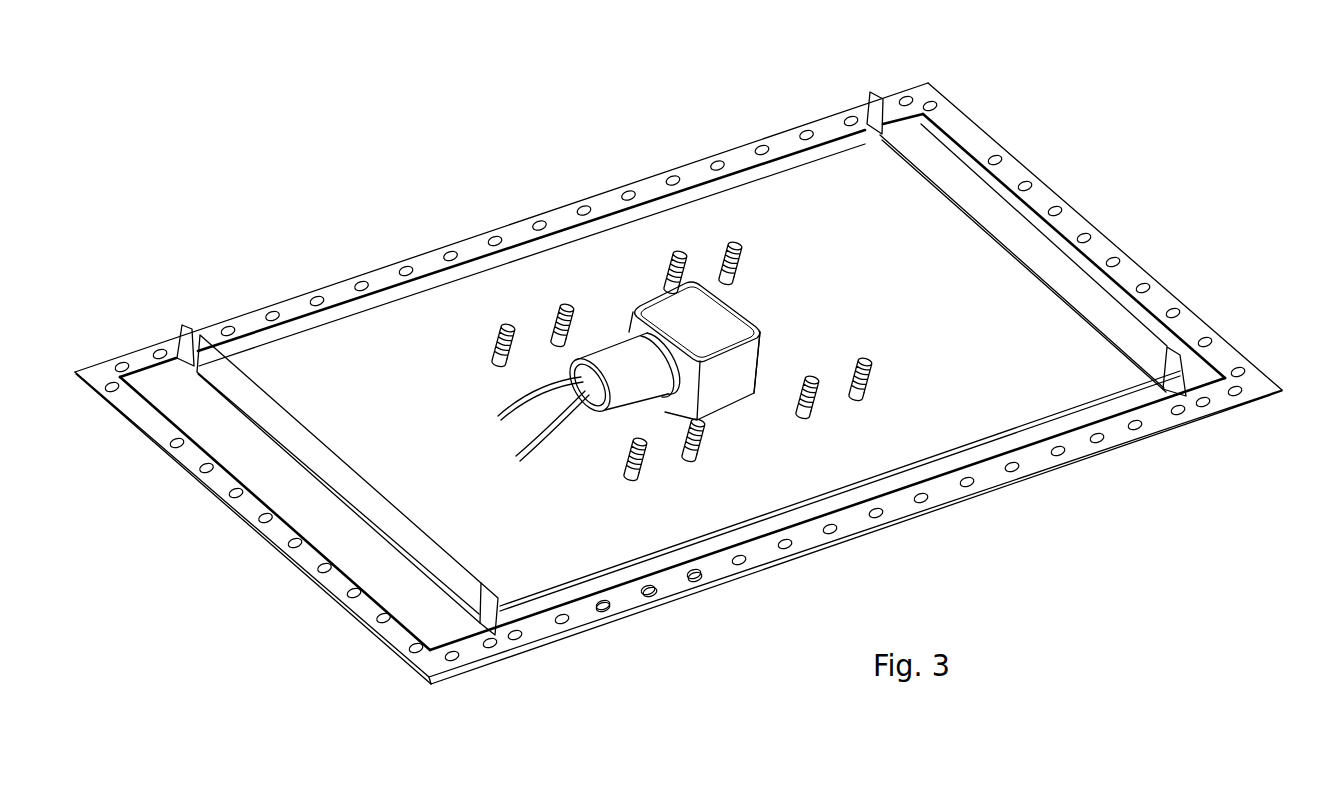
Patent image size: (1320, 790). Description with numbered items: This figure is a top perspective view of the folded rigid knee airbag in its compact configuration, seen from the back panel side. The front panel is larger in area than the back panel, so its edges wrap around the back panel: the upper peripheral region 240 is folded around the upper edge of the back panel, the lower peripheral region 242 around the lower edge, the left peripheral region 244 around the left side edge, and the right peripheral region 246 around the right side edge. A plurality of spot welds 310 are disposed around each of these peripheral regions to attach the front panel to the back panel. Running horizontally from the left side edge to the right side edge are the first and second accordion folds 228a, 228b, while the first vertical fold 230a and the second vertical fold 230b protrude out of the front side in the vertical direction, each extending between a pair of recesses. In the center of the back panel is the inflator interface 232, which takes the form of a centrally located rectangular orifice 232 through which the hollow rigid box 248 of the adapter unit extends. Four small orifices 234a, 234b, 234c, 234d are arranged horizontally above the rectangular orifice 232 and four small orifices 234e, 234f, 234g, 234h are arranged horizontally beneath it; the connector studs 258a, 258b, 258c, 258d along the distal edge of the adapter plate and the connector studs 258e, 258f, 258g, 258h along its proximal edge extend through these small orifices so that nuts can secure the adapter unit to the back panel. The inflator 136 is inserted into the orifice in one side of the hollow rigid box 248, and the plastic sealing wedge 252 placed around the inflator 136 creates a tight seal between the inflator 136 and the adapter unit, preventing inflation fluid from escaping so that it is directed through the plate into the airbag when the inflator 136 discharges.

The inflator 136 is at (627, 397).
The first accordion fold 228a is at (797, 168).
The second accordion fold 228b is at (1105, 405).
The first vertical fold 230a is at (255, 390).
The second vertical fold 230b is at (940, 162).
The inflator interface 232 is at (617, 355).
The small orifice 234a is at (501, 368).
The small orifice 234b is at (552, 338).
The small orifice 234c is at (671, 288).
The small orifice 234d is at (731, 283).
The small orifice 234e is at (634, 480).
The small orifice 234f is at (694, 463).
The small orifice 234g is at (805, 421).
The small orifice 234h is at (858, 400).
The upper peripheral region 240 is at (601, 202).
The lower peripheral region 242 is at (950, 495).
The left peripheral region 244 is at (240, 513).
The right peripheral region 246 is at (1090, 216).
The hollow rigid box 248 is at (738, 316).
The plastic sealing wedge 252 is at (644, 304).
The connector stud 258a is at (499, 338).
The connector stud 258b is at (571, 306).
The connector stud 258c is at (681, 254).
The connector stud 258d is at (738, 245).
The connector stud 258e is at (634, 446).
The connector stud 258f is at (703, 432).
The connector stud 258g is at (810, 378).
The connector stud 258h is at (867, 361).
The spot welds 310 is at (605, 610).